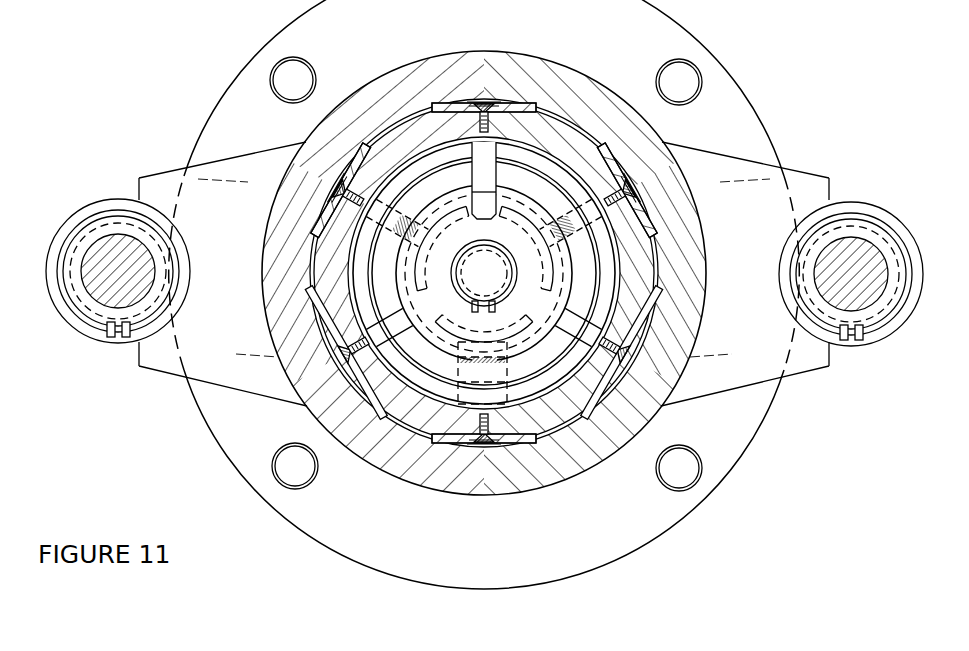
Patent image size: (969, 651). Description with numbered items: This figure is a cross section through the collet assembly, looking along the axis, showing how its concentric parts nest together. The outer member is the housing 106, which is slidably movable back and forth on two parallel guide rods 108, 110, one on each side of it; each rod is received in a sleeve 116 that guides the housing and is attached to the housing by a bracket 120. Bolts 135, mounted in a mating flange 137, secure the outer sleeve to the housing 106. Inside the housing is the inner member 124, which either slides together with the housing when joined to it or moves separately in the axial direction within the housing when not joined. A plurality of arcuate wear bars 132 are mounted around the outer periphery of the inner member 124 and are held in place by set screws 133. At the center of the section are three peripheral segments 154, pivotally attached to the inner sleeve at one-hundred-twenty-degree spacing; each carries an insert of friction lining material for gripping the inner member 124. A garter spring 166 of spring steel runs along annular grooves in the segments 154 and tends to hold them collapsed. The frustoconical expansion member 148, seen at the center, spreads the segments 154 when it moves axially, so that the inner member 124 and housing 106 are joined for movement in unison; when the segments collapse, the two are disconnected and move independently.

The housing 106 is at (404, 82).
The guide rod 108 is at (99, 245).
The guide rod 110 is at (850, 248).
The sleeve 116 is at (100, 330).
The bracket 120 is at (178, 166).
The inner member 124 is at (650, 277).
The arcuate wear bars 132 is at (528, 102).
The set screws 133 is at (478, 98).
The bolts 135 is at (272, 66).
The flange 137 is at (380, 573).
The expansion member 148 is at (532, 347).
The peripheral segments 154 is at (527, 191).
The garter spring 166 is at (338, 267).